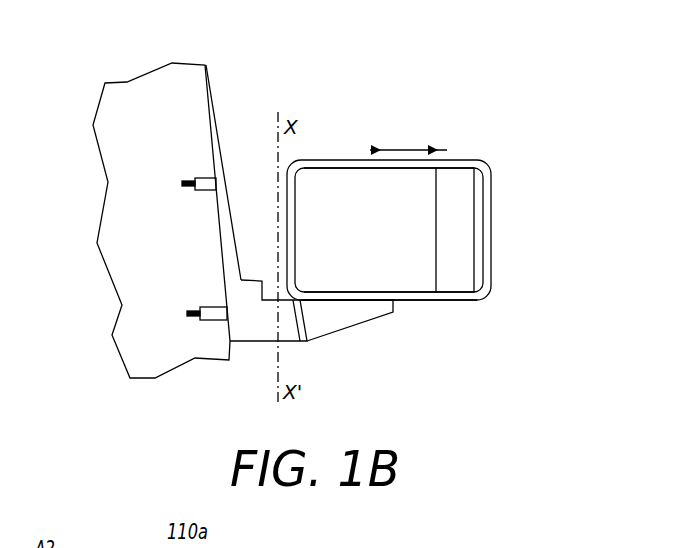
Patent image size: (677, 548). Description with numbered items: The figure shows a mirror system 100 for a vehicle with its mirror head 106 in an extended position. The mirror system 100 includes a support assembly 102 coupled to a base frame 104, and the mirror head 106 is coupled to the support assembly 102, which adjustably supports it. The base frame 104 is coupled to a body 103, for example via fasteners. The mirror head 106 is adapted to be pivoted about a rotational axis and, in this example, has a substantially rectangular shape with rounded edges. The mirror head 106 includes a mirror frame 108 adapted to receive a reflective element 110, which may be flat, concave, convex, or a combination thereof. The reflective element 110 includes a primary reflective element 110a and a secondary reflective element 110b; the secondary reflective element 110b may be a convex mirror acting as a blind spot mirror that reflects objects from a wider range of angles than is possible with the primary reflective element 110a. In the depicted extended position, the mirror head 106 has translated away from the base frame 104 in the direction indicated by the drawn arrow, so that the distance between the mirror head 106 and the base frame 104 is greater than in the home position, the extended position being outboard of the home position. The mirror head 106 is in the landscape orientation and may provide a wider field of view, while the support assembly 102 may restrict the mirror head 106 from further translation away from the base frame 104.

The mirror system 100 is at (425, 218).
The support assembly 102 is at (333, 348).
The body 103 is at (117, 220).
The base frame 104 is at (248, 328).
The mirror head 106 is at (459, 223).
The mirror frame 108 is at (491, 287).
The reflective element 110 is at (433, 223).
The primary reflective element 110a is at (370, 277).
The secondary reflective element 110b is at (453, 223).